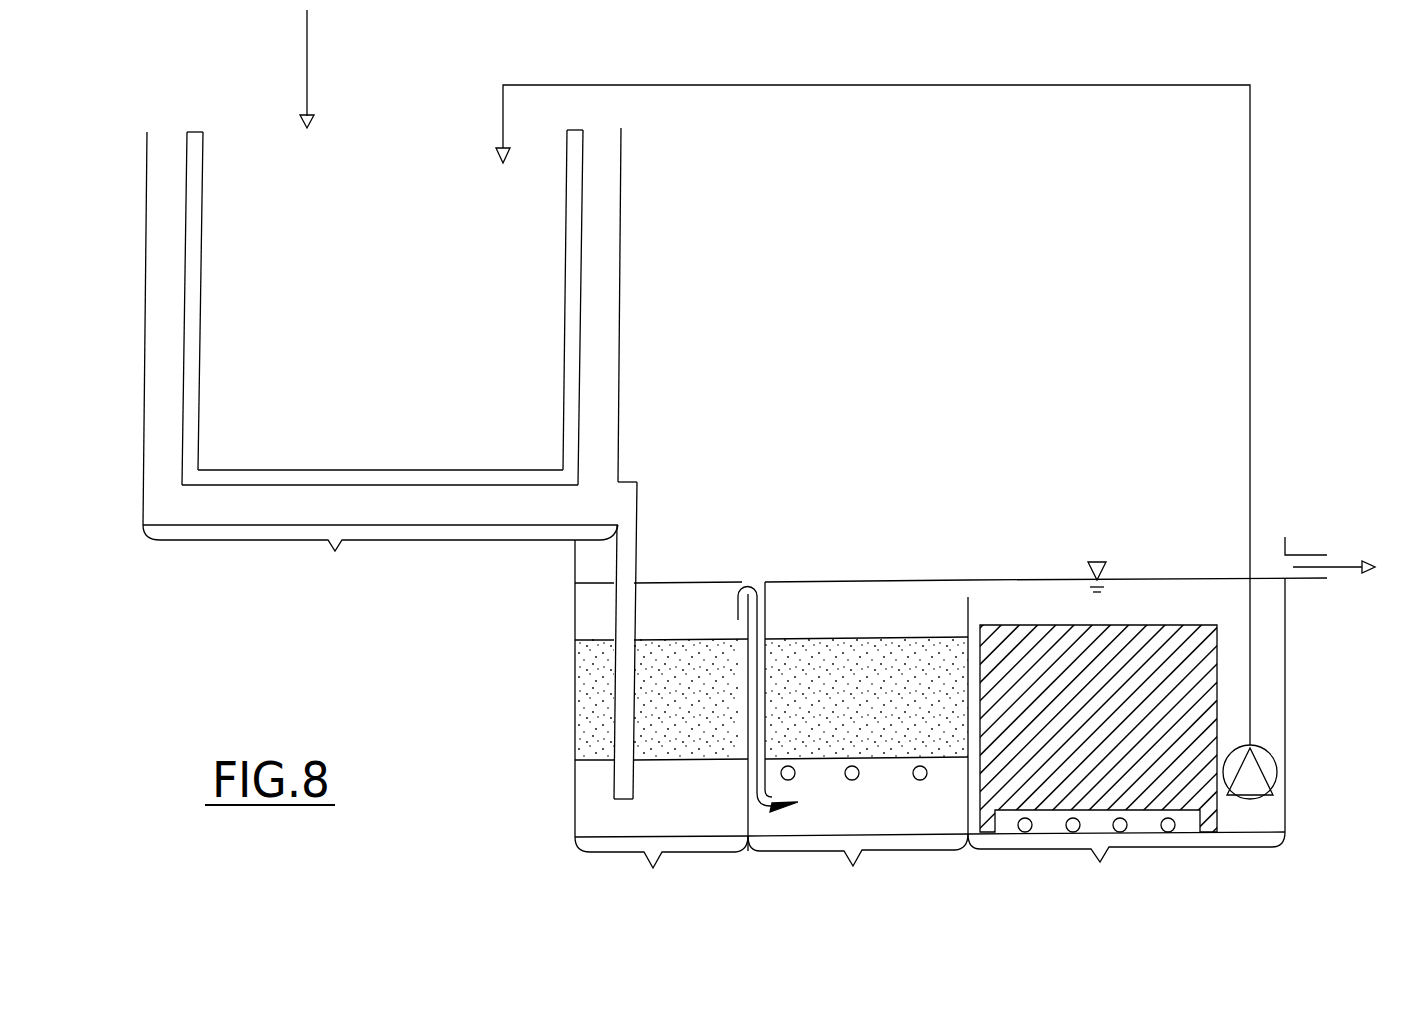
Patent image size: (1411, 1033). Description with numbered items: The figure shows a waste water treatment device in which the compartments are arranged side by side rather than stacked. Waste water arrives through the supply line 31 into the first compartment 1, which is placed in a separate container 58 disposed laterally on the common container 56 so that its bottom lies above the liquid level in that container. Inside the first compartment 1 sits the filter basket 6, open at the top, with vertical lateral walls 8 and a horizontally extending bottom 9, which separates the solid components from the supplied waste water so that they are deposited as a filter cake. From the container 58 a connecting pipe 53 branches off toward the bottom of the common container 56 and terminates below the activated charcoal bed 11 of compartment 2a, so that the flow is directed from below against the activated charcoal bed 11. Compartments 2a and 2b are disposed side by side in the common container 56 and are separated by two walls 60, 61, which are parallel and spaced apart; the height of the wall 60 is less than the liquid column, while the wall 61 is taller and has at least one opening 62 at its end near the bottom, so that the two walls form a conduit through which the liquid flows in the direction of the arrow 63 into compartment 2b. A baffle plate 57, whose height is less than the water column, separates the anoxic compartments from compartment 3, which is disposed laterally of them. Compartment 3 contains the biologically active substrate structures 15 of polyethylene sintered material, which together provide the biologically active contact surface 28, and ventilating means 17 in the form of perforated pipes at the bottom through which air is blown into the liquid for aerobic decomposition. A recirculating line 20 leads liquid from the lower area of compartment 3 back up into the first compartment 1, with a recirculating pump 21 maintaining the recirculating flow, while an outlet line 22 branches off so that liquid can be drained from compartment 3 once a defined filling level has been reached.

The supply line 31 is at (309, 60).
The first compartment 1 is at (336, 556).
The bottom 9 is at (330, 472).
The lateral walls 8 is at (582, 235).
The filter basket 6 is at (598, 163).
The separate container 58 is at (621, 243).
The connecting pipe 53 is at (627, 513).
The recirculating line 20 is at (953, 86).
The compartment 2a is at (653, 871).
The compartment 2b is at (853, 869).
The third compartment 3 is at (1100, 865).
The activated charcoal bed 11 is at (677, 710).
The wall 60 is at (740, 630).
The arrow 63 is at (745, 592).
The wall 61 is at (768, 625).
The opening 62 is at (790, 817).
The ventilating means 17 is at (919, 766).
The baffle plate 57 is at (965, 792).
The biologically active contact surface 28 is at (1190, 673).
The substrate structures 15 is at (1035, 678).
The recirculating pump 21 is at (1250, 777).
The outlet line 22 is at (1305, 558).
The common container 56 is at (1288, 812).